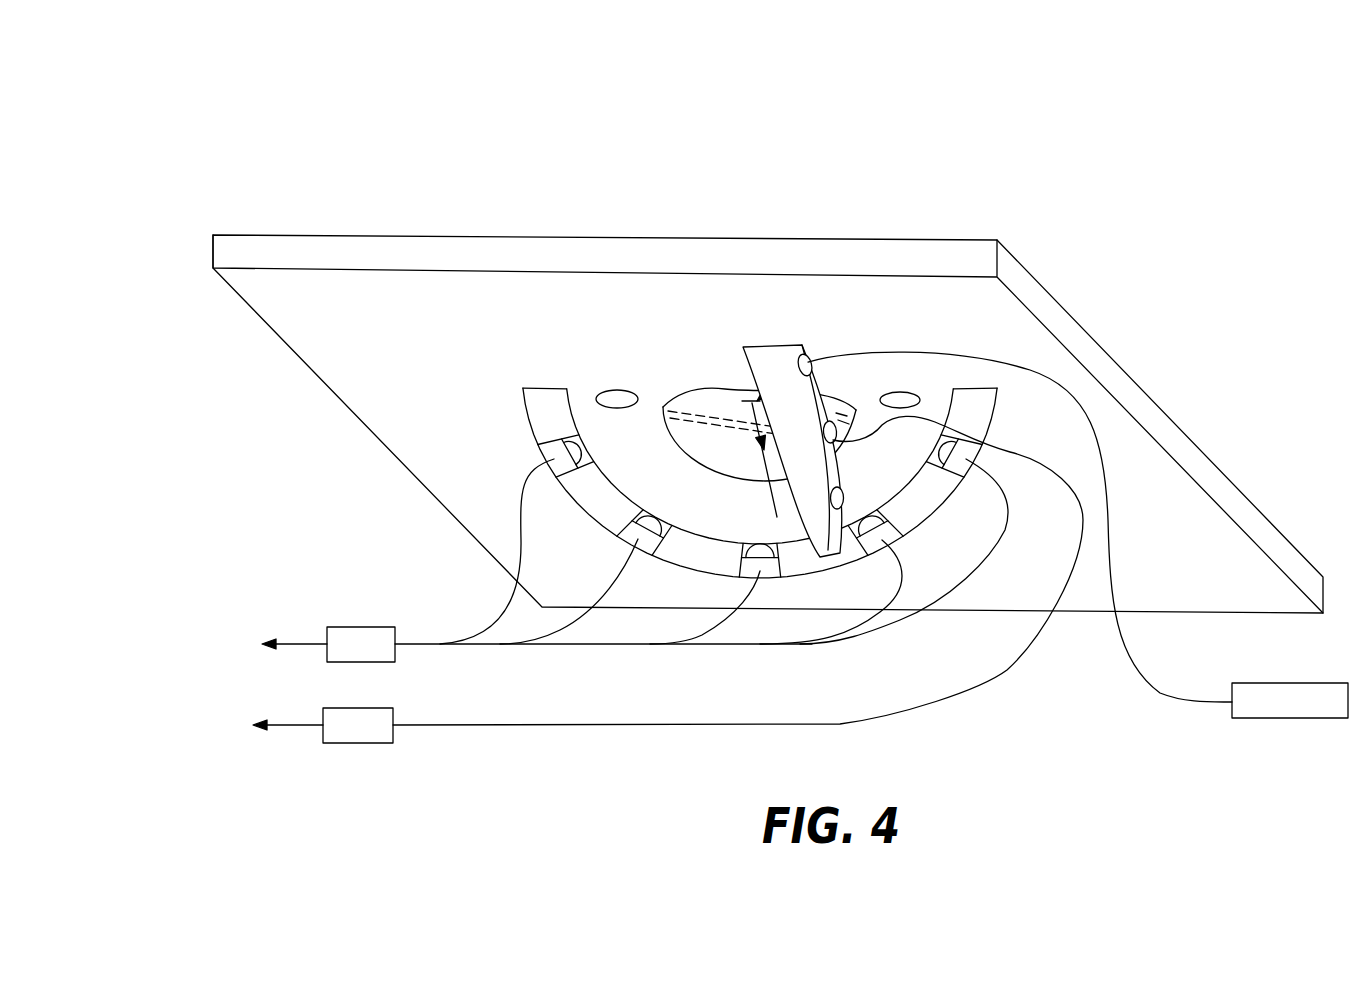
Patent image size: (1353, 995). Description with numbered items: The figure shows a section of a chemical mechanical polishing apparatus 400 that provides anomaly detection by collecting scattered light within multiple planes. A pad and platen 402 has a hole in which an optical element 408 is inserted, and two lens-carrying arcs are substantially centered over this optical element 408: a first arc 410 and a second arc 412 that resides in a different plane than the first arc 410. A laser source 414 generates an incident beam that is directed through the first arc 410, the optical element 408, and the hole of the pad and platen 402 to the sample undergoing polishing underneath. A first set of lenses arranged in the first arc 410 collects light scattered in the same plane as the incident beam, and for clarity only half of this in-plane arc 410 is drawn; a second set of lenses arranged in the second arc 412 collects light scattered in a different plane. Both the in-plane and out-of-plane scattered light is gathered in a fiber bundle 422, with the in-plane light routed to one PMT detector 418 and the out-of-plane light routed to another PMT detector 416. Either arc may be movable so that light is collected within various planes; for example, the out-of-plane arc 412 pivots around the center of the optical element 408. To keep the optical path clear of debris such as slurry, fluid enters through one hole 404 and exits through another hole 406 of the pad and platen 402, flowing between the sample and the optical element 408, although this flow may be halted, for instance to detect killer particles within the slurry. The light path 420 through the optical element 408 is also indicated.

The CMP apparatus 400 is at (1176, 212).
The pad and platen 402 is at (334, 393).
The hole 404 is at (595, 386).
The hole 406 is at (905, 392).
The optical element 408 is at (672, 383).
The first arc 410 is at (810, 338).
The second arc 412 is at (967, 430).
The laser source 414 is at (1265, 718).
The PMT detector 416 is at (367, 627).
The PMT detector 418 is at (367, 743).
The light path 420 is at (740, 394).
The fiber bundle 422 is at (851, 710).